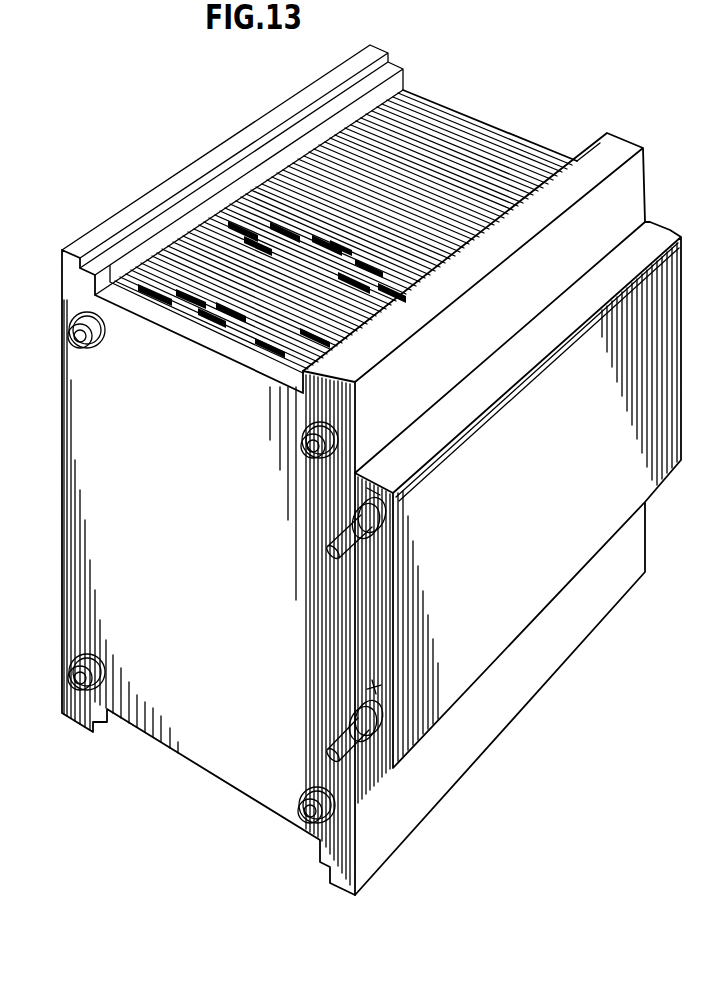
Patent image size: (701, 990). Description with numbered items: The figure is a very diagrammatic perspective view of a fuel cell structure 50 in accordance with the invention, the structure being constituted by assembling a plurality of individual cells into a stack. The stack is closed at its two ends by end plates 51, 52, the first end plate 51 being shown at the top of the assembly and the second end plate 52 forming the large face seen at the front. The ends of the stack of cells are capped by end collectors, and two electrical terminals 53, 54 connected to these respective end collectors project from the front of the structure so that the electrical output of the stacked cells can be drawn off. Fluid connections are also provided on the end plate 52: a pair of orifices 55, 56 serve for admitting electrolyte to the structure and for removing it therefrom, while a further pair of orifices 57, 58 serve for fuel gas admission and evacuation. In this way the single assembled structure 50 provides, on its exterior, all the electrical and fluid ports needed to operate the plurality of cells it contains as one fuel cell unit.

The fuel cell structure 50 is at (222, 144).
The end plate 51 is at (493, 132).
The end plate 52 is at (210, 727).
The electrical terminal 53 is at (340, 533).
The electrical terminal 54 is at (342, 730).
The electrolyte orifice 55 is at (73, 337).
The electrolyte orifice 56 is at (300, 817).
The fuel gas orifice 57 is at (297, 457).
The fuel gas orifice 58 is at (77, 680).